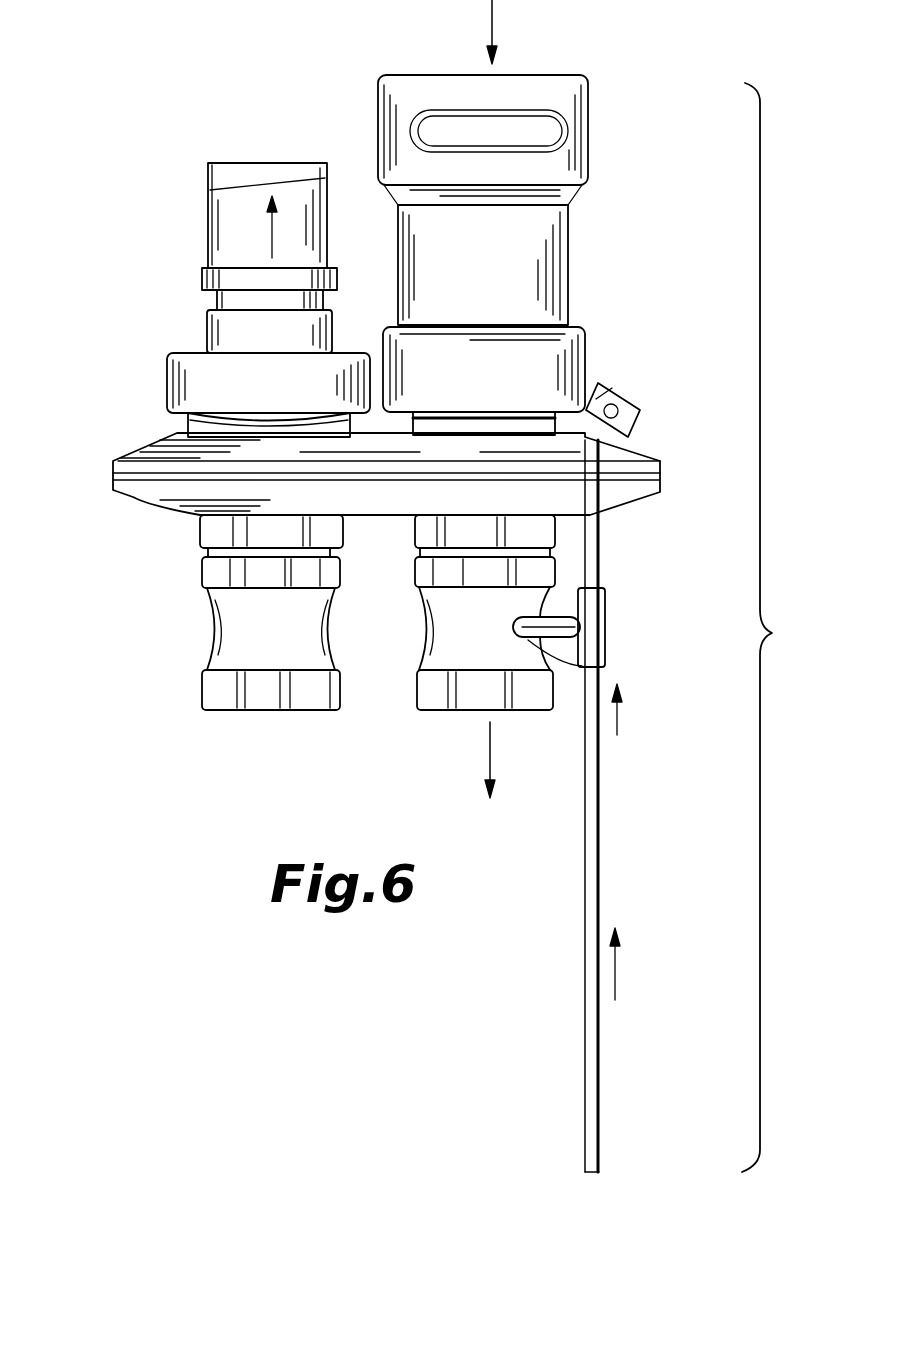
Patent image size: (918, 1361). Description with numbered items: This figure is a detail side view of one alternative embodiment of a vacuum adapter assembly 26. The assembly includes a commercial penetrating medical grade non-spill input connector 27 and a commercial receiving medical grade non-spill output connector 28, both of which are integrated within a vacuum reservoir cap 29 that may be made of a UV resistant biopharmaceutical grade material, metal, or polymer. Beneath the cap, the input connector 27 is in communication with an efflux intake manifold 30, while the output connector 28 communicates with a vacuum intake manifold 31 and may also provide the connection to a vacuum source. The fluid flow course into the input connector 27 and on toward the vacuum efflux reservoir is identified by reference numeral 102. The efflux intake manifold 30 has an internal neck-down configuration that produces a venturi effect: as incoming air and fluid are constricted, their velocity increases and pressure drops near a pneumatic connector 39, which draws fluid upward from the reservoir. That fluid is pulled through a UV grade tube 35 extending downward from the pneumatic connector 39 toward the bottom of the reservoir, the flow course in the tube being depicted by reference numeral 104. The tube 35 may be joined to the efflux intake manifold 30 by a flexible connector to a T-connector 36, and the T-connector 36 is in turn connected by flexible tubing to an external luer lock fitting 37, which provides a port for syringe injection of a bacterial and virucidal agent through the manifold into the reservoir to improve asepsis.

The vacuum adapter assembly 26 is at (772, 633).
The input connector 27 is at (580, 271).
The output connector 28 is at (196, 226).
The vacuum reservoir cap 29 is at (137, 452).
The efflux intake manifold 30 is at (420, 629).
The vacuum intake manifold 31 is at (198, 627).
The UV grade tube 35 is at (612, 850).
The T-connector 36 is at (620, 612).
The luer lock fitting 37 is at (638, 380).
The pneumatic connector 39 is at (600, 667).
The fluid flow course 102 is at (488, 22).
The fluid flow course 104 is at (560, 615).